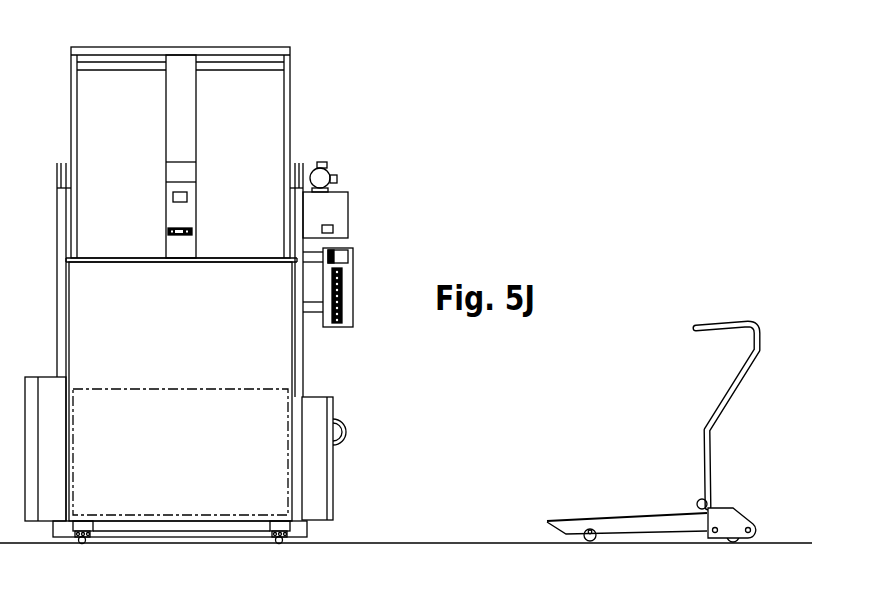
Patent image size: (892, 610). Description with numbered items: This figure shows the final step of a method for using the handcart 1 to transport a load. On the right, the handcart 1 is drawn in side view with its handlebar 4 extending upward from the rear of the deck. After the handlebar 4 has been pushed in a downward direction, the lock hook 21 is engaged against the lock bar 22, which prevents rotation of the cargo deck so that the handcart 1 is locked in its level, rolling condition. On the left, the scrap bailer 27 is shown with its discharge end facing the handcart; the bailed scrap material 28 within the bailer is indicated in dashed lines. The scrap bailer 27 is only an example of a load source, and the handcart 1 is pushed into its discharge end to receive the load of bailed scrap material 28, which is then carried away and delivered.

The scrap bailer 27 is at (273, 117).
The bailed scrap material 28 is at (188, 400).
The handcart 1 is at (616, 424).
The handlebar 4 is at (730, 405).
The hook 21 is at (702, 507).
The lock bar 22 is at (707, 517).